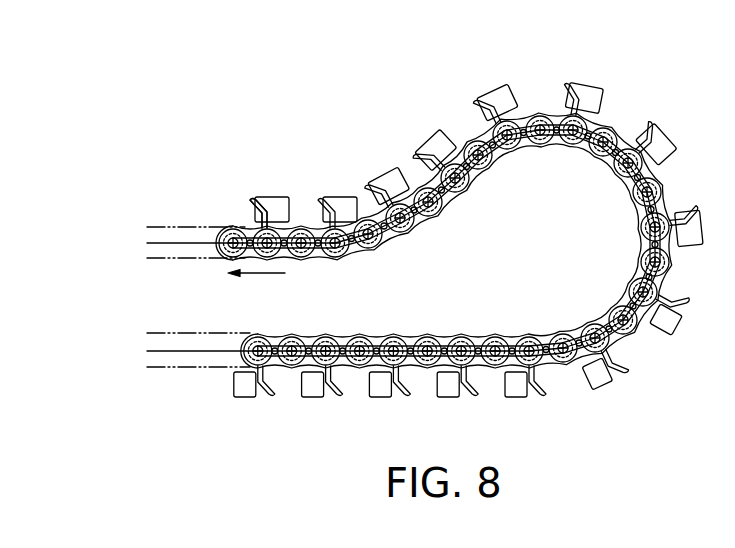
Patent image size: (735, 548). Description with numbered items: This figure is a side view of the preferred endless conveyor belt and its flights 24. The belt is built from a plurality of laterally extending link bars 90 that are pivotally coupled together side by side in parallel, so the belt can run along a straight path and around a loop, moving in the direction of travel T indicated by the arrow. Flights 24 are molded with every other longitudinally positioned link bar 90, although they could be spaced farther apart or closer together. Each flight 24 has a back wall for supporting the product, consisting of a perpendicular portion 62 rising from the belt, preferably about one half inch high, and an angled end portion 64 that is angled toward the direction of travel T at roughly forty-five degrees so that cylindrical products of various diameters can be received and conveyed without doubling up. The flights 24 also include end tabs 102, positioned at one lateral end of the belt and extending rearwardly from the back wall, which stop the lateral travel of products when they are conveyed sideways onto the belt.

The flights 24 is at (258, 206).
The perpendicular portion 62 is at (256, 225).
The angled end portion 64 is at (262, 210).
The link bars 90 is at (522, 150).
The end tabs 102 is at (338, 202).
The direction of travel T is at (270, 276).